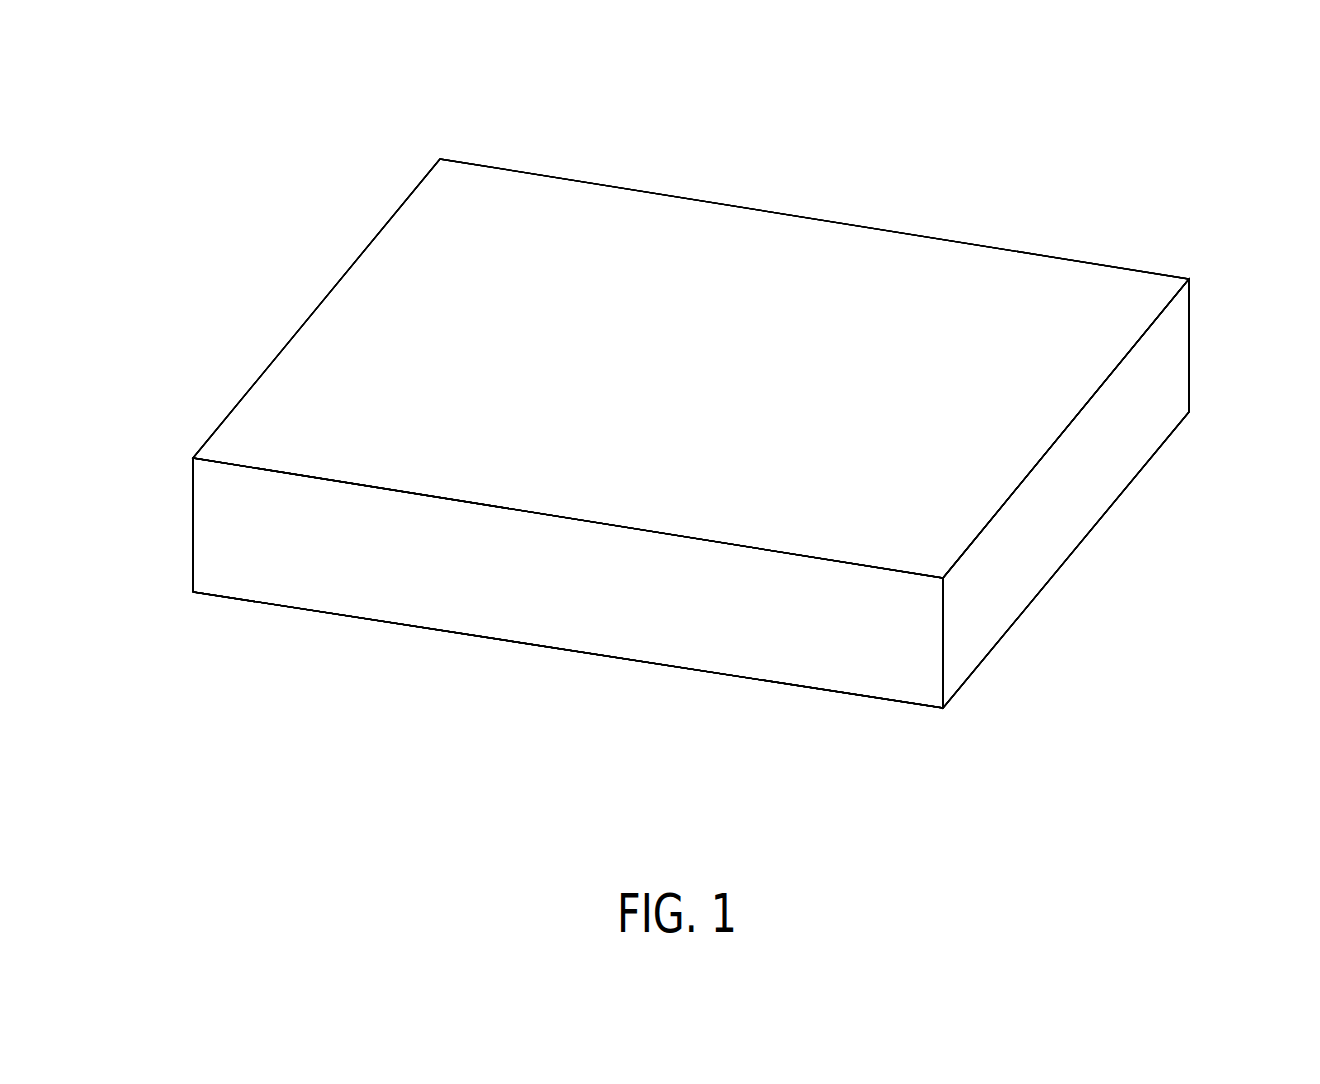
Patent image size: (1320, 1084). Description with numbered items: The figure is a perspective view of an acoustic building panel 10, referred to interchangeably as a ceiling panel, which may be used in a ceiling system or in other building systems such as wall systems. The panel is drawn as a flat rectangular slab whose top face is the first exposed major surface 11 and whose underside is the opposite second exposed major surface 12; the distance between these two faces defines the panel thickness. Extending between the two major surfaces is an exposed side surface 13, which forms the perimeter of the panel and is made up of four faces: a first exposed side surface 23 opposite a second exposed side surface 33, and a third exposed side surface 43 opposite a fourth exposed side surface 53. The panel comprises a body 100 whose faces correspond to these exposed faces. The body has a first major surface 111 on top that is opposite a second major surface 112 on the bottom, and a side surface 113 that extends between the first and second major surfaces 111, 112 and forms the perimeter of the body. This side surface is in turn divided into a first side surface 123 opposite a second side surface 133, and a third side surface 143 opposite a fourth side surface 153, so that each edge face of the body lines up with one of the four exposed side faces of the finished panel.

The building panel 10 is at (1198, 174).
The body 100 is at (331, 350).
The first exposed major surface 11 is at (855, 273).
The first major surface 111 is at (652, 250).
The second exposed major surface 12 is at (745, 678).
The second major surface 112 is at (635, 660).
The exposed side surface 13 is at (287, 572).
The side surface 113 is at (440, 583).
The first exposed side surface 23 is at (1070, 510).
The first side surface 123 is at (977, 635).
The second side surface 133 is at (193, 515).
The third side surface 143 is at (880, 647).
The fourth side surface 153 is at (1190, 375).
The second exposed side surface 33 is at (193, 560).
The third exposed side surface 43 is at (563, 603).
The fourth exposed side surface 53 is at (1190, 303).